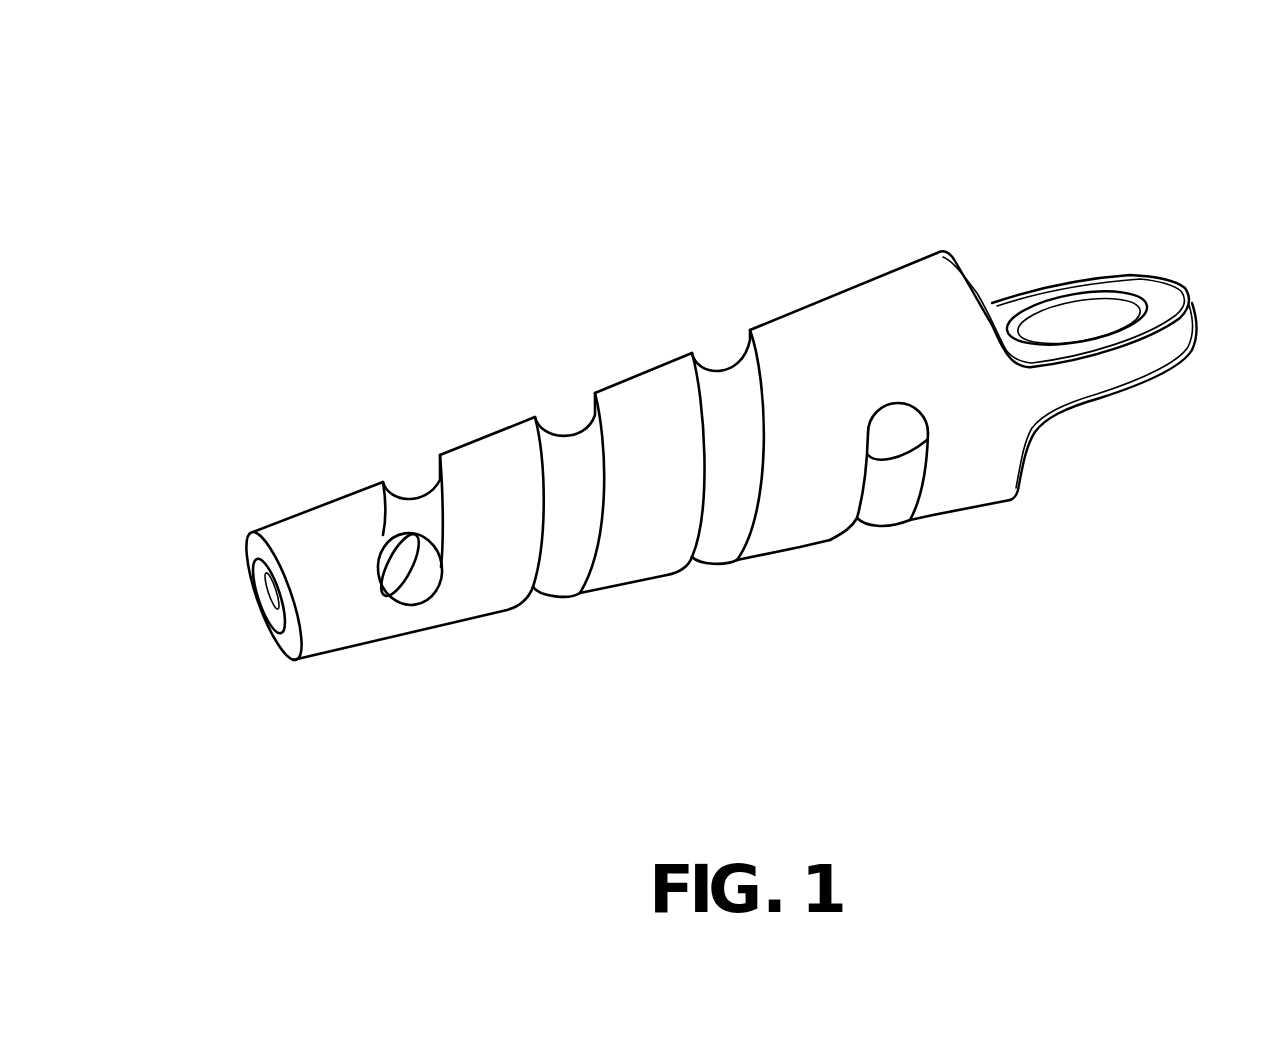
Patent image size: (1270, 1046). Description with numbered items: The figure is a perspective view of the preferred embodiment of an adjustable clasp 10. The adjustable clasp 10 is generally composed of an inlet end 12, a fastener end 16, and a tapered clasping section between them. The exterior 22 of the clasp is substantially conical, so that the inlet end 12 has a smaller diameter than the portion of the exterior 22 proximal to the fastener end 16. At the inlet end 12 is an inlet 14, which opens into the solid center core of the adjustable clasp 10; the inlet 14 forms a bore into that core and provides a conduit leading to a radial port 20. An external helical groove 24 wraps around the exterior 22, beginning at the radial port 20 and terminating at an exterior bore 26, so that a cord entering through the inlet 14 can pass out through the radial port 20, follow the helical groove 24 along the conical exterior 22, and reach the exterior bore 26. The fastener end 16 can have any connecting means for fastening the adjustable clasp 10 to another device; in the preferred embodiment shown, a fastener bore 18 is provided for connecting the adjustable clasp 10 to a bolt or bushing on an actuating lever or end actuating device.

The adjustable clasp 10 is at (800, 277).
The inlet end 12 is at (283, 643).
The inlet 14 is at (260, 573).
The fastener end 16 is at (1103, 377).
The fastener bore 18 is at (1078, 322).
The radial port 20 is at (417, 567).
The exterior 22 is at (495, 463).
The external helical groove 24 is at (740, 508).
The exterior bore 26 is at (900, 430).